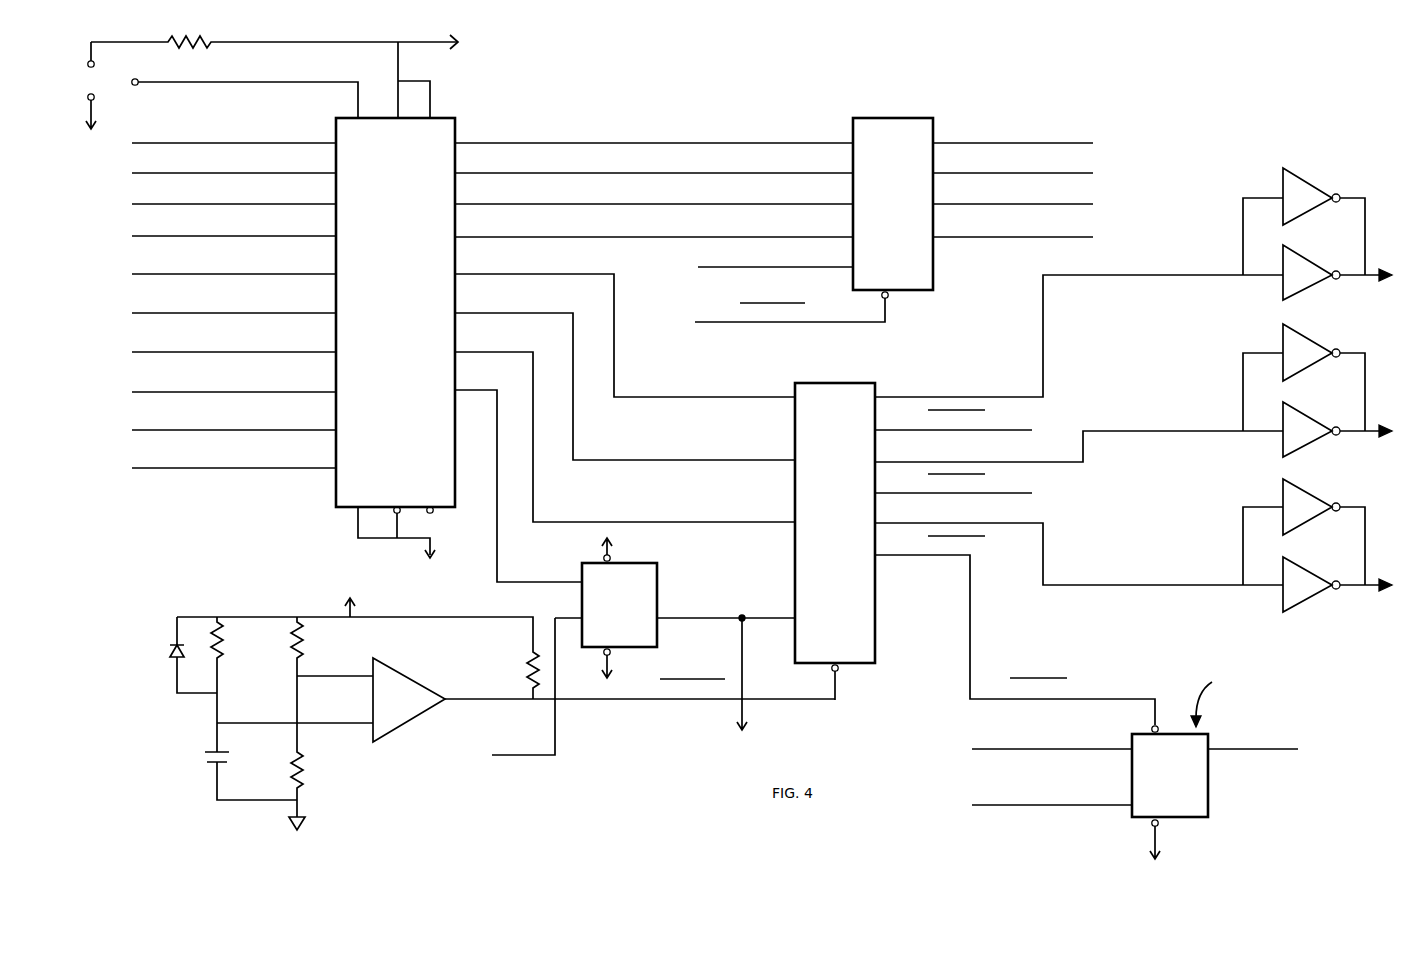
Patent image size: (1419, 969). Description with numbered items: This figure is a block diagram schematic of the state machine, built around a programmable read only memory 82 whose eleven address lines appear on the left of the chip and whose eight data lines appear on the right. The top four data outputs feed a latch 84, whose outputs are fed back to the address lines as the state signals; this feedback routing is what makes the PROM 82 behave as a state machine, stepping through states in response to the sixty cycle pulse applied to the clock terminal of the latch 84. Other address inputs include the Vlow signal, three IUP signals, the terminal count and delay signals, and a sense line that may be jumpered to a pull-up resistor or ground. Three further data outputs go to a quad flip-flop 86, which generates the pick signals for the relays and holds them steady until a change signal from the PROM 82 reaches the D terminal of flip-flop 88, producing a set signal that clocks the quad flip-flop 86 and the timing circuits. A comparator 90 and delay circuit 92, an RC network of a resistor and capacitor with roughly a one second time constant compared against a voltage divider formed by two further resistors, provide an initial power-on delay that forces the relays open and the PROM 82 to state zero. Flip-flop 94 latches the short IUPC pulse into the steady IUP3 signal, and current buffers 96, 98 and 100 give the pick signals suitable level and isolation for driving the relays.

The programmable read only memory 82 is at (346, 508).
The latch 84 is at (933, 283).
The quad flip-flop 86 is at (875, 627).
The flip-flop 88 is at (657, 589).
The comparator 90 is at (378, 738).
The delay circuit 92 is at (222, 600).
The flip-flop 94 is at (1208, 815).
The buffer 96 is at (1297, 222).
The buffer 98 is at (1297, 377).
The buffer 100 is at (1297, 531).